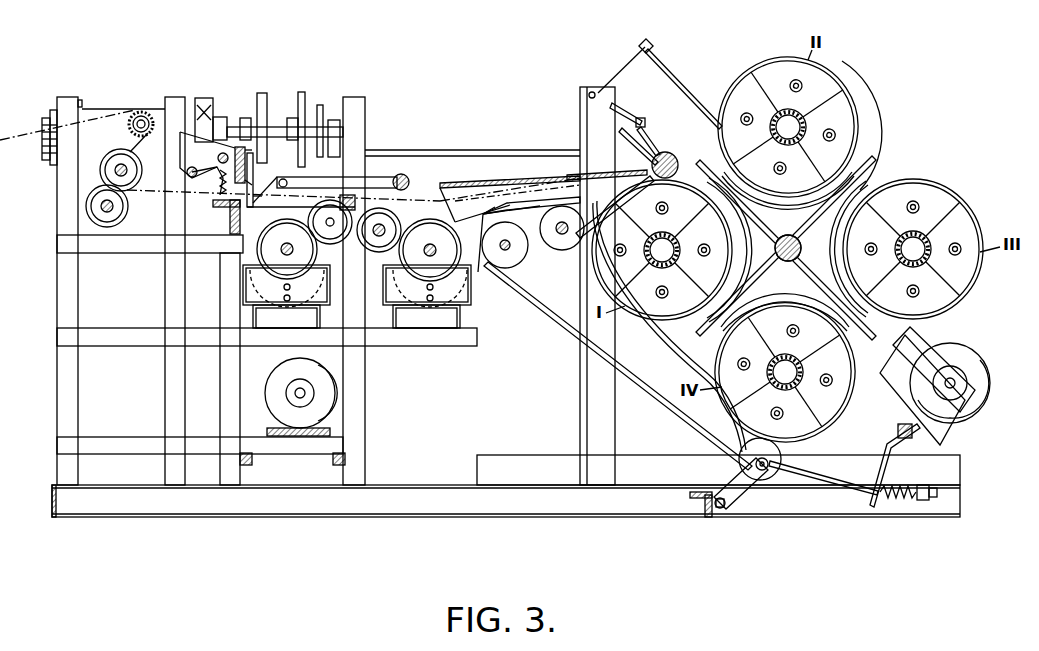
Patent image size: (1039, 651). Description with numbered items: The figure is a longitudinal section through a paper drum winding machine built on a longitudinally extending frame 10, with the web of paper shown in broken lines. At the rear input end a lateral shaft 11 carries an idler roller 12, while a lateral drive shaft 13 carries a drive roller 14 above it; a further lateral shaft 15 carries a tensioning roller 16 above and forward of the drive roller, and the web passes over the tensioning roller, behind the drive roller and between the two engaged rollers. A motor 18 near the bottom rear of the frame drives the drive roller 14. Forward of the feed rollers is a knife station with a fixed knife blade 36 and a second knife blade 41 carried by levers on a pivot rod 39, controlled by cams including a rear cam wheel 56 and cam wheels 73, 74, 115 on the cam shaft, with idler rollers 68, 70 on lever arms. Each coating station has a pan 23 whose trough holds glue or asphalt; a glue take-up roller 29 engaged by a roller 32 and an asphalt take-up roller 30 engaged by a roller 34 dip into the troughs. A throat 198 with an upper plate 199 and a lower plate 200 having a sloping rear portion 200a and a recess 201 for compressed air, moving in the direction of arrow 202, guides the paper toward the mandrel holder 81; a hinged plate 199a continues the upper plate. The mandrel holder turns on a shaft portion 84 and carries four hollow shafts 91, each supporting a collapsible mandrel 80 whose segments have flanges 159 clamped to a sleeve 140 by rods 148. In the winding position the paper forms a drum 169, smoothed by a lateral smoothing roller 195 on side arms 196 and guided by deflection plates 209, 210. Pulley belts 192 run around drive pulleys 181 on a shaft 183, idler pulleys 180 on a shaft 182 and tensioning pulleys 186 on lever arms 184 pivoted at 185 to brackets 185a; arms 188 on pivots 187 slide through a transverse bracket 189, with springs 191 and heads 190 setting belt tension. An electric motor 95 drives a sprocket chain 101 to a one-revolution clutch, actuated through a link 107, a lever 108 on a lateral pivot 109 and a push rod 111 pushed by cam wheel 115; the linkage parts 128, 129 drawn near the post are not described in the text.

The frame 10 is at (452, 338).
The lateral shaft 11 is at (101, 206).
The idler roller 12 is at (88, 193).
The lateral drive shaft 13 is at (115, 170).
The drive roller 14 is at (106, 155).
The lateral shaft 15 is at (143, 113).
The tensioning roller 16 is at (134, 116).
The motor 18 is at (270, 380).
The pan 23 is at (295, 305).
The glue take-up roller 29 is at (287, 223).
The asphalt take-up roller 30 is at (410, 258).
The roller 32 is at (345, 236).
The roller 34 is at (370, 246).
The knife blade 36 is at (230, 224).
The pivot rod 39 is at (210, 170).
The second knife blade 41 is at (240, 145).
The rear cam wheel 56 is at (206, 100).
The idler roller 68 is at (348, 194).
The idler roller 70 is at (403, 176).
The cam wheel 73 is at (263, 96).
The cam wheel 74 is at (303, 96).
The collapsible mandrel 80 is at (835, 84).
The mandrel holder 81 is at (905, 155).
The shaft portion of increased diameter 84 is at (800, 258).
The hollow lateral shaft 91 is at (918, 237).
The electric motor 95 is at (968, 360).
The sprocket chain 101 is at (935, 345).
The link 107 is at (680, 80).
The lever 108 is at (643, 44).
The lateral pivot 109 is at (593, 92).
The push rod 111 is at (372, 152).
The cam wheel 115 is at (321, 110).
The link 128 is at (626, 111).
The pin 129 is at (645, 121).
The sleeve 140 is at (930, 243).
The rod 148 is at (962, 246).
The flange 159 is at (970, 260).
The drum 169 is at (772, 68).
The idler pulley 180 is at (568, 252).
The drive pulley 181 is at (505, 270).
The lateral shaft 182 is at (561, 236).
The lateral shaft 183 is at (511, 246).
The lever arm 184 is at (730, 505).
The lateral pivot 185 is at (720, 512).
The bracket 185a is at (706, 520).
The tensioning pulley 186 is at (770, 478).
The lateral pivot 187 is at (750, 450).
The arm 188 is at (845, 482).
The transverse bracket 189 is at (872, 515).
The front end head 190 is at (926, 505).
The spring 191 is at (898, 502).
The pulley belt 192 is at (668, 412).
The lateral smoothing roller 195 is at (666, 152).
The side arm 196 is at (610, 213).
The throat 198 is at (462, 182).
The upper plate 199 is at (444, 182).
The hinged plate 199a is at (602, 174).
The lower plate 200 is at (537, 200).
The rear portion of lower plate 200a is at (482, 212).
The recess 201 is at (480, 255).
The arrow 202 is at (492, 195).
The deflection plate 209 is at (742, 222).
The deflection plate 210 is at (733, 270).